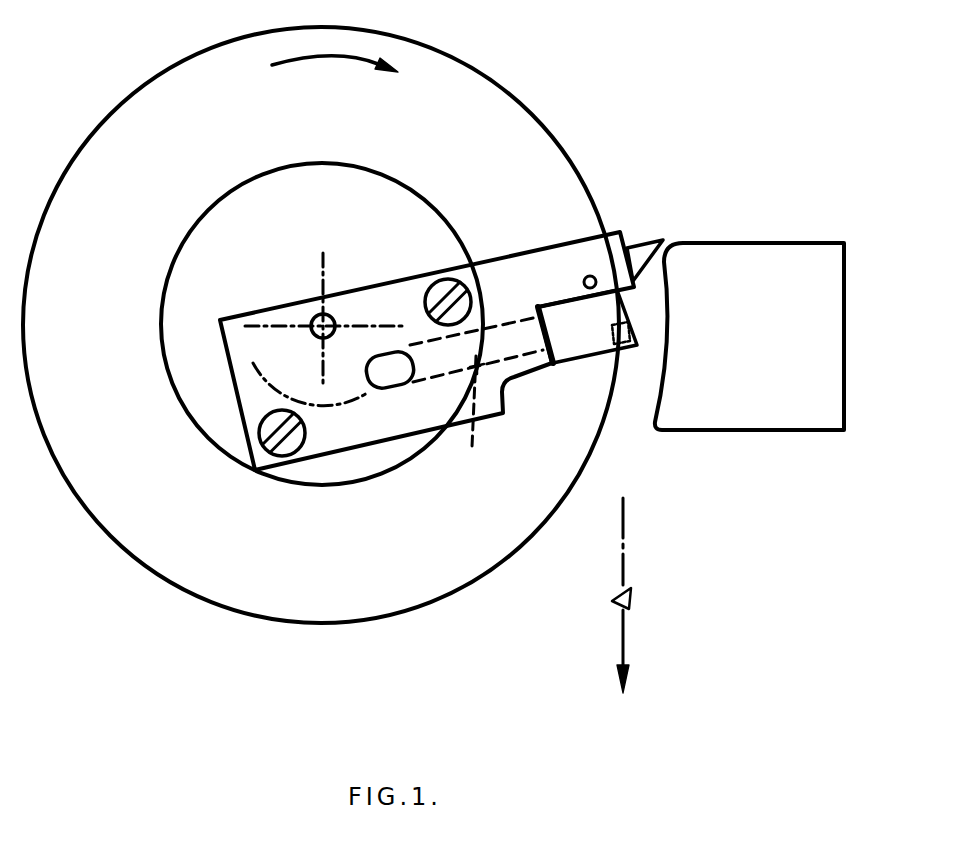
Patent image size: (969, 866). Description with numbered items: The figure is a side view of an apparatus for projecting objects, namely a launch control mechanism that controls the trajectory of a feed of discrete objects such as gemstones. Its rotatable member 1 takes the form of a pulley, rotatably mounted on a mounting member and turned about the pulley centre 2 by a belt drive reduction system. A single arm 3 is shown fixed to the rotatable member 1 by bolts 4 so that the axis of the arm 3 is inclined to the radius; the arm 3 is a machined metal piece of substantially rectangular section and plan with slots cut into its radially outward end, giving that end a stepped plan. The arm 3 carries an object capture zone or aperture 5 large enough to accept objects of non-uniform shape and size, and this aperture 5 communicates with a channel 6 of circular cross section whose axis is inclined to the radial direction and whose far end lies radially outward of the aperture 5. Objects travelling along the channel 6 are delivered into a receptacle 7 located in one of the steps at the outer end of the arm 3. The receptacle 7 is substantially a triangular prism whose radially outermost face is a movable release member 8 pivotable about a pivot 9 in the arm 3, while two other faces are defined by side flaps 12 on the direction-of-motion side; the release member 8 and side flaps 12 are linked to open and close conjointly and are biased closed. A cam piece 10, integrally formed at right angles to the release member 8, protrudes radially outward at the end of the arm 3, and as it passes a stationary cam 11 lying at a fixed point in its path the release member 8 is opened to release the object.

The rotatable member 1 is at (508, 115).
The axis of rotation 2 is at (332, 320).
The arm 3 is at (560, 260).
The bolts 4 is at (440, 290).
The aperture 5 is at (392, 384).
The channel 6 is at (474, 417).
The receptacle 7 is at (604, 374).
The release member 8 is at (613, 310).
The pivot 9 is at (592, 275).
The cam piece 10 is at (645, 253).
The stationary cam 11 is at (757, 407).
The side flaps 12 is at (570, 347).